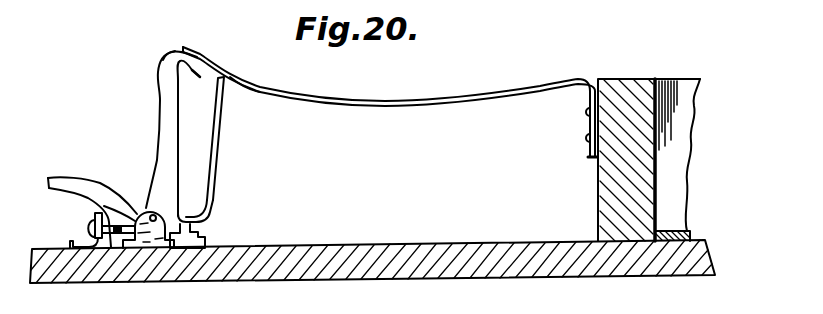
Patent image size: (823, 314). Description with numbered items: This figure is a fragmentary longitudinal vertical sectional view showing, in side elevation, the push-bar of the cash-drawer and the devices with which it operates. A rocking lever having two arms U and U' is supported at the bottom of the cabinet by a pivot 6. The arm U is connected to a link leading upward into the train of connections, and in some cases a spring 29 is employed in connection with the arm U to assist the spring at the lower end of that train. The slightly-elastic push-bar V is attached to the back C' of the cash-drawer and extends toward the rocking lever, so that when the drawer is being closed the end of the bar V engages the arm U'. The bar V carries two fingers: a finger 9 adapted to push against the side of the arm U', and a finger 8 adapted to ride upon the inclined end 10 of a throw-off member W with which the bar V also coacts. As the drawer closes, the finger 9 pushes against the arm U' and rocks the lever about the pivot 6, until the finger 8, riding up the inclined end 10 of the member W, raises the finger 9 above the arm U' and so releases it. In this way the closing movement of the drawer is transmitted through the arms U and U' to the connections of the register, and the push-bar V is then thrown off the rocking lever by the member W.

The finger 8 is at (197, 50).
The finger 9 is at (240, 93).
The inclined end 10 is at (198, 78).
The throw-off member W is at (162, 115).
The arm U is at (92, 193).
The arm U' is at (215, 162).
The push-bar V is at (412, 107).
The back of the cash-drawer C' is at (625, 160).
The spring 29 is at (92, 233).
The pivot 6 is at (153, 221).